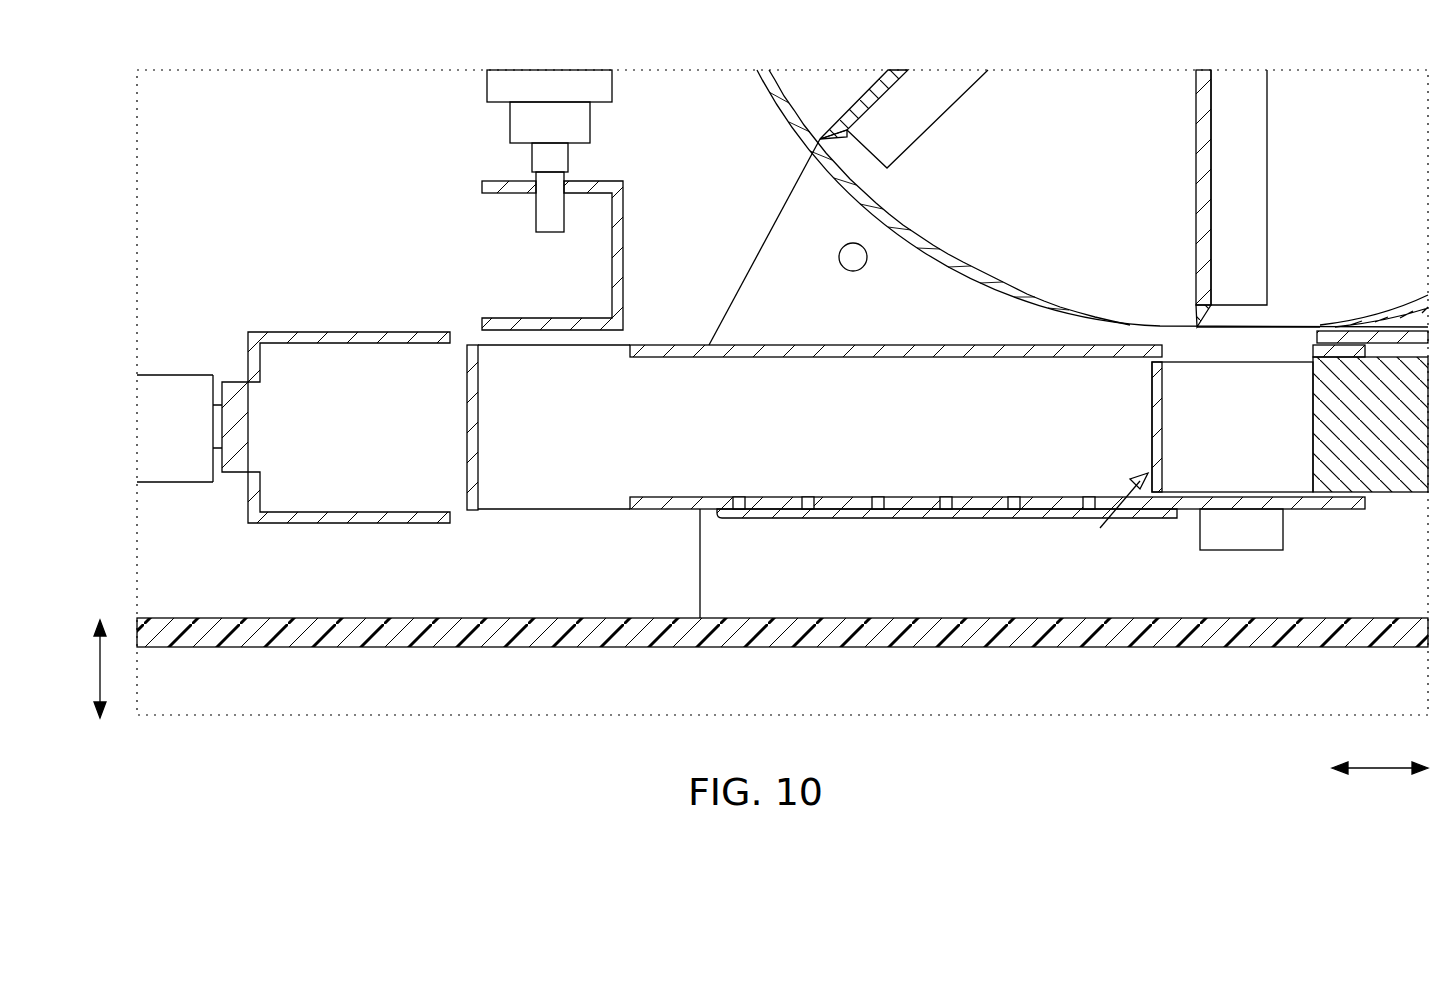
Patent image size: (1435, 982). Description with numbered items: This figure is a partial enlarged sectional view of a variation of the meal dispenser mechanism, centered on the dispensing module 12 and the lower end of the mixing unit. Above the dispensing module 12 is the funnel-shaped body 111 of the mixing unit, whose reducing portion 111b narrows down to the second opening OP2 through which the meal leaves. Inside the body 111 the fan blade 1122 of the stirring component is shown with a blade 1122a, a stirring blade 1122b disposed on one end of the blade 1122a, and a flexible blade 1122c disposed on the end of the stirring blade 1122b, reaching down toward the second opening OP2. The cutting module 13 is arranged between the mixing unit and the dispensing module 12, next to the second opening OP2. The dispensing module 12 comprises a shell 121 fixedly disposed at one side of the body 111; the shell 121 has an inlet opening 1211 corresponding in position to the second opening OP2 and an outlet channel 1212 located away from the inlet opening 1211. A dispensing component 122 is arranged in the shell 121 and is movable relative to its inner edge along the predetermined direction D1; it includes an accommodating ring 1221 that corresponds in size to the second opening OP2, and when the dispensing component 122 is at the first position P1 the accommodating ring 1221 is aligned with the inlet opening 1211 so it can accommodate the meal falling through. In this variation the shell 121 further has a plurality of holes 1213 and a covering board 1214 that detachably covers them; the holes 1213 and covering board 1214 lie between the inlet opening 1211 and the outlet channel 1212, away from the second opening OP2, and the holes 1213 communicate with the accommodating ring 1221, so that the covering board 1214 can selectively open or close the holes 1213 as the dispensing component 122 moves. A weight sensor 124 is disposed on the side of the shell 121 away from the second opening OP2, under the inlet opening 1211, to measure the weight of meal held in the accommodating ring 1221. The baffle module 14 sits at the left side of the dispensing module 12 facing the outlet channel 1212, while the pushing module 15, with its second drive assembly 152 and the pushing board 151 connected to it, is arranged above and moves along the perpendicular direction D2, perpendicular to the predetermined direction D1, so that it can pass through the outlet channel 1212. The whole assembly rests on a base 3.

The base 3 is at (1194, 640).
The body 111 is at (1064, 207).
The reducing portion 111b is at (965, 268).
The fan blade 1122 is at (1121, 198).
The blade 1122a is at (1232, 147).
The stirring blade 1122b is at (1207, 225).
The flexible blade 1122c is at (1192, 318).
The second opening OP2 is at (1297, 318).
The cutting module 13 is at (1395, 335).
The dispensing module 12 is at (947, 448).
The shell 121 is at (997, 506).
The inlet opening 1211 is at (1190, 424).
The accommodating ring 1221 is at (1211, 426).
The outlet channel 1212 is at (563, 505).
The holes 1213 is at (877, 496).
The covering board 1214 is at (961, 514).
The dispensing component 122 is at (1390, 470).
The weight sensor 124 is at (1251, 528).
The first position P1 is at (1115, 514).
The baffle module 14 is at (381, 515).
The pushing module 15 is at (496, 200).
The pushing board 151 is at (516, 255).
The second drive assembly 152 is at (503, 88).
The predetermined direction D1 is at (1380, 755).
The perpendicular direction D2 is at (80, 669).